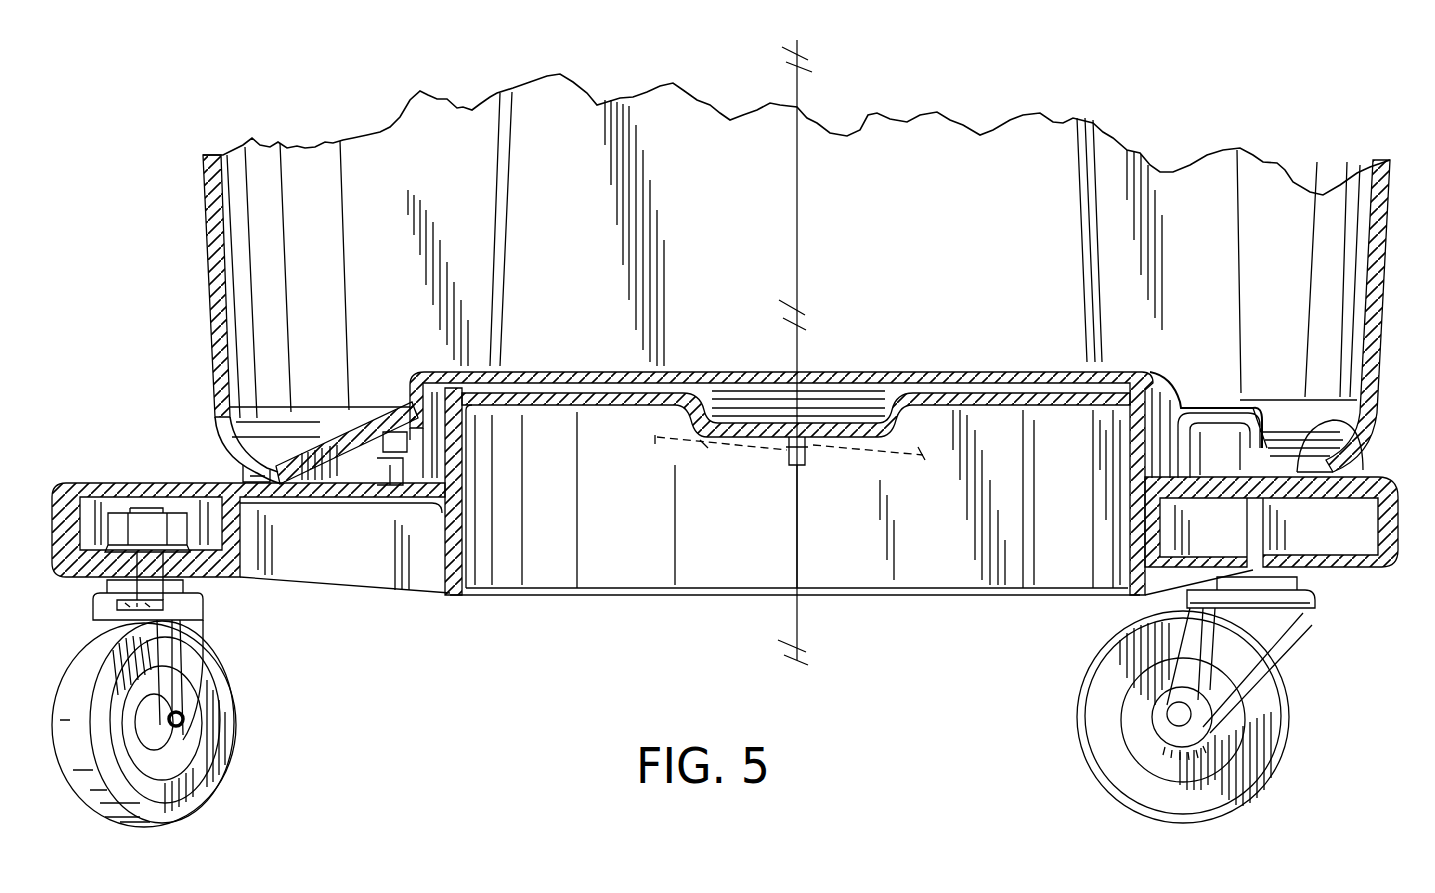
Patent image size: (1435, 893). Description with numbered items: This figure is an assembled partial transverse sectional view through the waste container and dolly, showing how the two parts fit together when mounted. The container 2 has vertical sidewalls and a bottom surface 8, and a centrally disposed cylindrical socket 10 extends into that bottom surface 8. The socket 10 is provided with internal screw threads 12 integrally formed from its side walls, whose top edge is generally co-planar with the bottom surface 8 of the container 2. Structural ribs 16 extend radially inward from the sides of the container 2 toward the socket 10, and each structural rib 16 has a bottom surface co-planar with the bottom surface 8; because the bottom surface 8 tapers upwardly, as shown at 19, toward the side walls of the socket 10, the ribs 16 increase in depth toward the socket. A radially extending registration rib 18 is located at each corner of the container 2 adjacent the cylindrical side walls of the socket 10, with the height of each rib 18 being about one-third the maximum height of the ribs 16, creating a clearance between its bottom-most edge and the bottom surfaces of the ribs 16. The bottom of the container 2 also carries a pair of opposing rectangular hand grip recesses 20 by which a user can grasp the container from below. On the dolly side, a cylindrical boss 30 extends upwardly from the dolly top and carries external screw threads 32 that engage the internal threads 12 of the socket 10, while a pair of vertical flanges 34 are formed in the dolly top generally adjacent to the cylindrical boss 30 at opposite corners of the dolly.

The container 2 is at (212, 278).
The bottom surface 8 is at (243, 463).
The cylindrical socket 10 is at (1156, 380).
The internal screw threads 12 is at (1183, 478).
The structural ribs 16 is at (303, 472).
The registration rib 18 is at (403, 433).
The upward taper of bottom surface 19 is at (350, 483).
The hand grip recesses 20 is at (1353, 428).
The cylindrical boss 30 is at (623, 404).
The external screw threads 32 is at (1130, 408).
The vertical flanges 34 is at (380, 468).